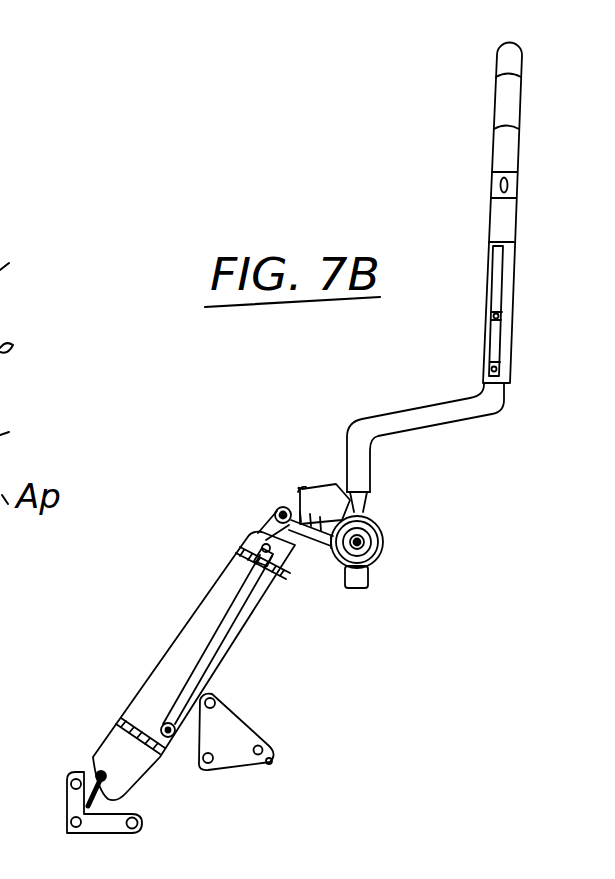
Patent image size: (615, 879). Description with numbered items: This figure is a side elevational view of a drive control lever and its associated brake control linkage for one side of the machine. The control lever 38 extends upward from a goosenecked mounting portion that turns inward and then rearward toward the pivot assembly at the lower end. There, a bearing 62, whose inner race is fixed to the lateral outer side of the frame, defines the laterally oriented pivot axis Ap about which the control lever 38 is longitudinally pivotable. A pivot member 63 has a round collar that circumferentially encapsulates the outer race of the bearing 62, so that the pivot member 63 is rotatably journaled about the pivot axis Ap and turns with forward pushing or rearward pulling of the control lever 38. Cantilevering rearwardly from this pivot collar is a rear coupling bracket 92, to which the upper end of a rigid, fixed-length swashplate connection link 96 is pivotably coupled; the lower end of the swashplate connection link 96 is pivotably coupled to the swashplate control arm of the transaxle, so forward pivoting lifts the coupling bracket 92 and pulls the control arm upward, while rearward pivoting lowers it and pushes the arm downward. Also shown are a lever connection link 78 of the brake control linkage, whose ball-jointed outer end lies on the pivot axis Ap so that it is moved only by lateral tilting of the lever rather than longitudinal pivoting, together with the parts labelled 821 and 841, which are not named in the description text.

The control lever 38 is at (517, 158).
The bracket plate 821 is at (323, 486).
The pivot member 63 is at (373, 510).
The bearing 62 is at (384, 549).
The pivot axis Ap is at (364, 540).
The rear coupling bracket 92 is at (327, 518).
The arm 841 is at (167, 652).
The swashplate connection link 96 is at (215, 647).
The lever connection link 78 is at (72, 799).